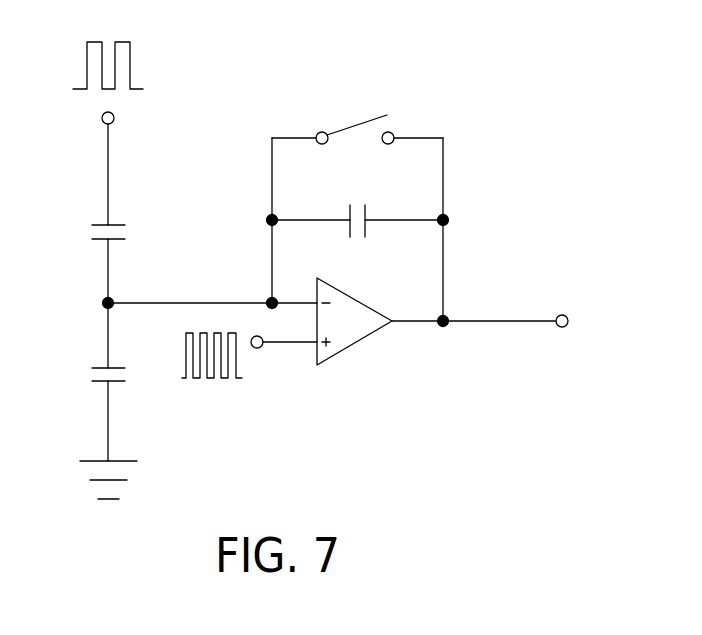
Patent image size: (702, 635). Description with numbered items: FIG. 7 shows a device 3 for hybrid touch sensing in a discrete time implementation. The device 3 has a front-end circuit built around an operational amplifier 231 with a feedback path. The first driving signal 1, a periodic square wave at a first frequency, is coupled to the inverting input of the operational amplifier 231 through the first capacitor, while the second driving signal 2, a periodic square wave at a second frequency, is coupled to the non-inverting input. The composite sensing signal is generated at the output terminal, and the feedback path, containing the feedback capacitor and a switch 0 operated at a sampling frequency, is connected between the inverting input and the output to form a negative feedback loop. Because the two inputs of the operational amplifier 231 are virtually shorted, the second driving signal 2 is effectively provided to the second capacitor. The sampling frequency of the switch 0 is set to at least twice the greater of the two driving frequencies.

The device 3 is at (618, 21).
The operational amplifier 231 is at (358, 345).
The first signal source V1 (frequency f1) 1 is at (97, 81).
The second signal source V2 (frequency f2) 2 is at (232, 365).
The switch SW0 0 is at (357, 112).